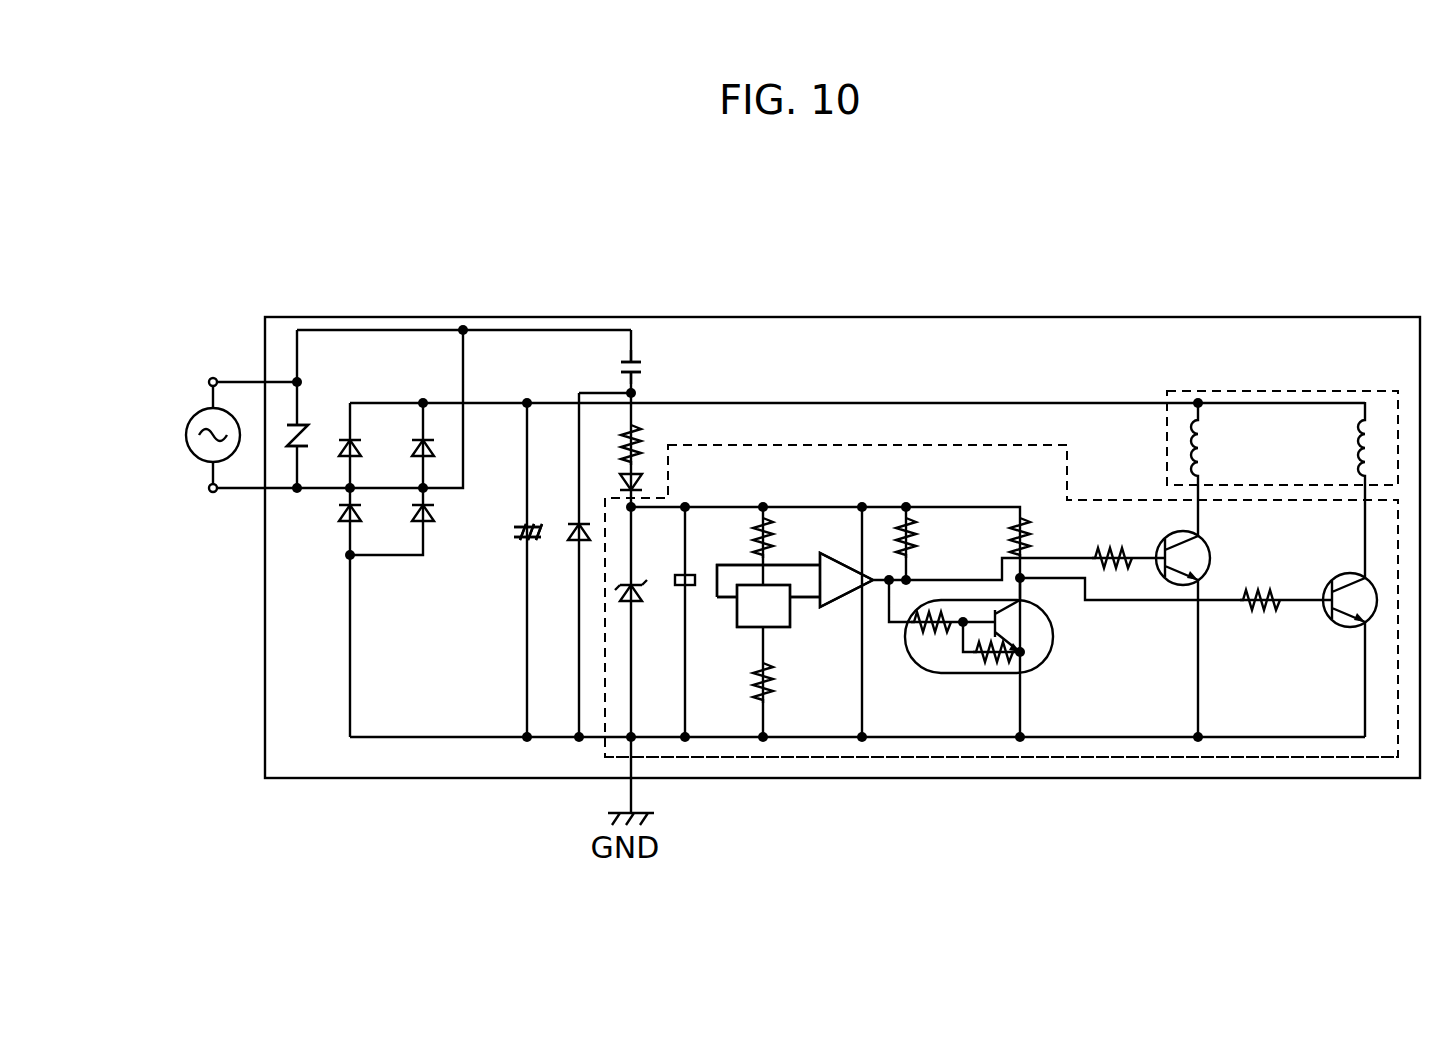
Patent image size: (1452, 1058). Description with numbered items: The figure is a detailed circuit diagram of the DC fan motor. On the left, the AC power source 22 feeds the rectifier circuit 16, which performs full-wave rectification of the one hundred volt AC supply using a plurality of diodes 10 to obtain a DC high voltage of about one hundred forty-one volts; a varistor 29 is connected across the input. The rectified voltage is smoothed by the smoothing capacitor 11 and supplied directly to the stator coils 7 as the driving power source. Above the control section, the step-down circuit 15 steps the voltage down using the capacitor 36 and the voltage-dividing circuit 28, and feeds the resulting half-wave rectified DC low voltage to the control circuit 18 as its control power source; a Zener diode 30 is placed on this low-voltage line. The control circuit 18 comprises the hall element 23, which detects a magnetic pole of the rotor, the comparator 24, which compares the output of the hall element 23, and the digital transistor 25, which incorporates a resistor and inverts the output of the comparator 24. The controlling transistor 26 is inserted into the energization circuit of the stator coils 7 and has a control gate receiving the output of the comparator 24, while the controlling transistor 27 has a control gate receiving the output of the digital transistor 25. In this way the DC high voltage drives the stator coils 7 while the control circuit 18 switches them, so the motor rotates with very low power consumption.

The AC power source 22 is at (213, 407).
The varistor 29 is at (308, 433).
The rectifier circuit 16 is at (403, 413).
The diodes 10 is at (343, 522).
The smoothing capacitor 11 is at (521, 543).
The capacitor 36 is at (640, 358).
The voltage-dividing circuit 28 is at (647, 443).
The step-down circuit 15 is at (663, 518).
The stator coils 7 is at (1375, 433).
The Zener diode 30 is at (627, 593).
The hall element 23 is at (753, 620).
The comparator 24 is at (837, 600).
The digital transistor 25 is at (963, 675).
The control circuit 18 is at (1137, 758).
The controlling transistor 26 is at (1200, 578).
The controlling transistor 27 is at (1367, 615).